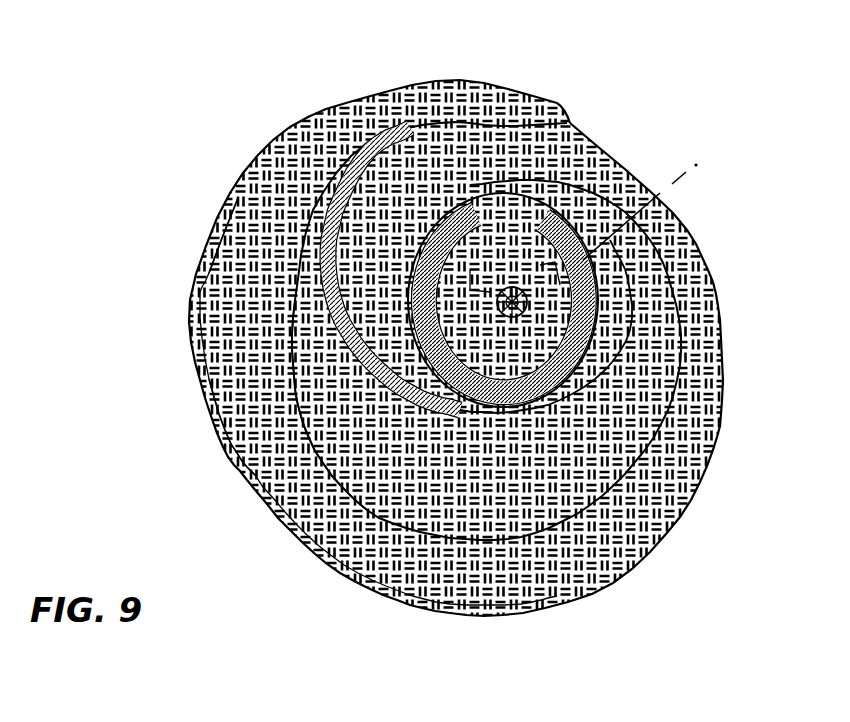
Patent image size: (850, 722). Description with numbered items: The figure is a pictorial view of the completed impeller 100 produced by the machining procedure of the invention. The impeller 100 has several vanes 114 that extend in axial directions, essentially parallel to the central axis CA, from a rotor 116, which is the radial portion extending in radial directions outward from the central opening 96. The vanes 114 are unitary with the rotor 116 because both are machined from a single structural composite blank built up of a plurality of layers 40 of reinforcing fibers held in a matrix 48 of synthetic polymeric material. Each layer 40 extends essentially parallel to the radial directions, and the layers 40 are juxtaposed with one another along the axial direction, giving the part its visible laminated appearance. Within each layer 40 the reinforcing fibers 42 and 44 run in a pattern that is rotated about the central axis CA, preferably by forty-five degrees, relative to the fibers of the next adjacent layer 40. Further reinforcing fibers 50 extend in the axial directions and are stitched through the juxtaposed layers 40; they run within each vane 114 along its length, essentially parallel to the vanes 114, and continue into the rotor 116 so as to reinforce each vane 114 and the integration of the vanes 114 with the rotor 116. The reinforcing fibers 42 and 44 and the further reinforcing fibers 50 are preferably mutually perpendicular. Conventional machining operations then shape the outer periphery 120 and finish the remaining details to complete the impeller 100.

The impeller 100 is at (338, 100).
The impeller vanes 114 is at (490, 80).
The rotor 116 is at (527, 598).
The outer periphery 120 is at (334, 566).
The matrix 48 is at (212, 220).
The reinforcing fibers 42 is at (298, 388).
The reinforcing fibers 44 is at (262, 420).
The layers 40 is at (252, 478).
The further reinforcing fibers 50 is at (279, 487).
The central opening 96 is at (590, 308).
The central axis CA is at (703, 163).